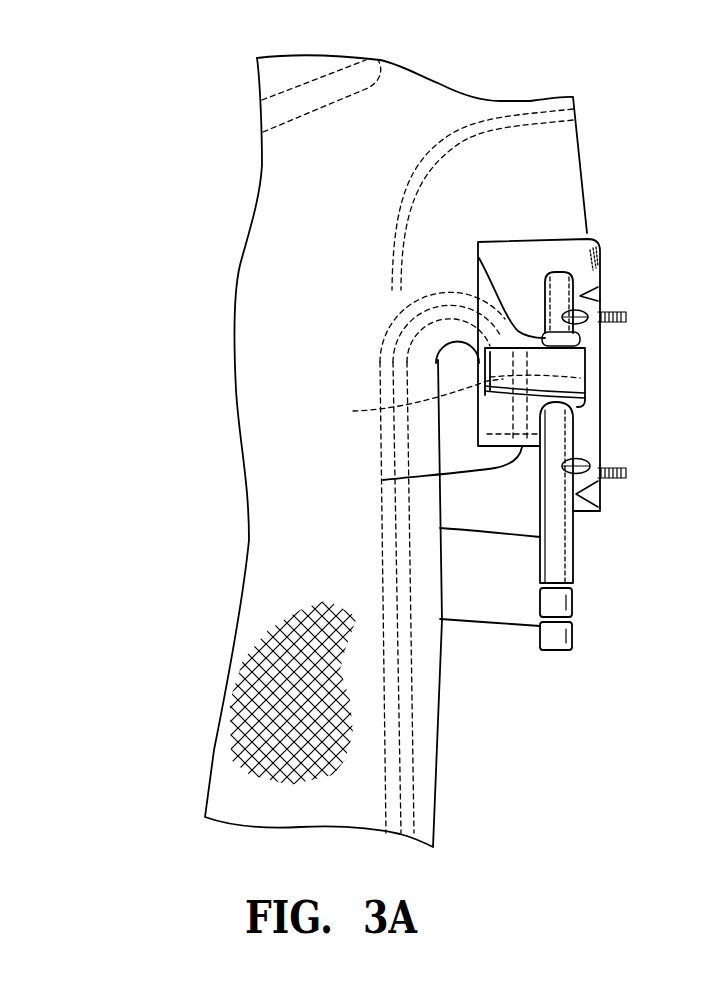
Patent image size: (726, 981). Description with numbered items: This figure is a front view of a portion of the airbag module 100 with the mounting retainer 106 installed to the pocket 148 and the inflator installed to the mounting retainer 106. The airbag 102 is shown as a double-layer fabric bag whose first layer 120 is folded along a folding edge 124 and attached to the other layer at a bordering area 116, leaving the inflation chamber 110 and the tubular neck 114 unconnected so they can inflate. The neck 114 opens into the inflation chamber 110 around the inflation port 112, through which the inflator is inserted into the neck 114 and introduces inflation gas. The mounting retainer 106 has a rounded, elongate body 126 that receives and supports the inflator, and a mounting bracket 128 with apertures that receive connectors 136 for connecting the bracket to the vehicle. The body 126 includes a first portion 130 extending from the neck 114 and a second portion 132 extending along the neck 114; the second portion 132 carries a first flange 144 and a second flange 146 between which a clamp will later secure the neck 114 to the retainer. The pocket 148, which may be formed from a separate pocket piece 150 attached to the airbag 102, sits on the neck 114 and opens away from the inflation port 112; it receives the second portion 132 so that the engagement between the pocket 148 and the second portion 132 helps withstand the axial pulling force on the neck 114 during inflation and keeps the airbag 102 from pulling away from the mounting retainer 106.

The airbag module 100 is at (600, 118).
The airbag 102 is at (586, 160).
The mounting retainer 106 is at (566, 520).
The inflation chamber 110 is at (270, 492).
The inflation port 112 is at (383, 480).
The tubular neck 114 is at (478, 358).
The bordering area 116 is at (410, 783).
The first layer 120 is at (265, 587).
The folding edge 124 is at (590, 223).
The body 126 is at (565, 528).
The mounting bracket 128 is at (598, 434).
The first portion 130 is at (557, 540).
The second portion 132 is at (572, 301).
The connectors 136 is at (627, 317).
The first flange 144 is at (478, 270).
The second flange 146 is at (408, 399).
The pocket 148 is at (578, 373).
The pocket piece 150 is at (518, 260).